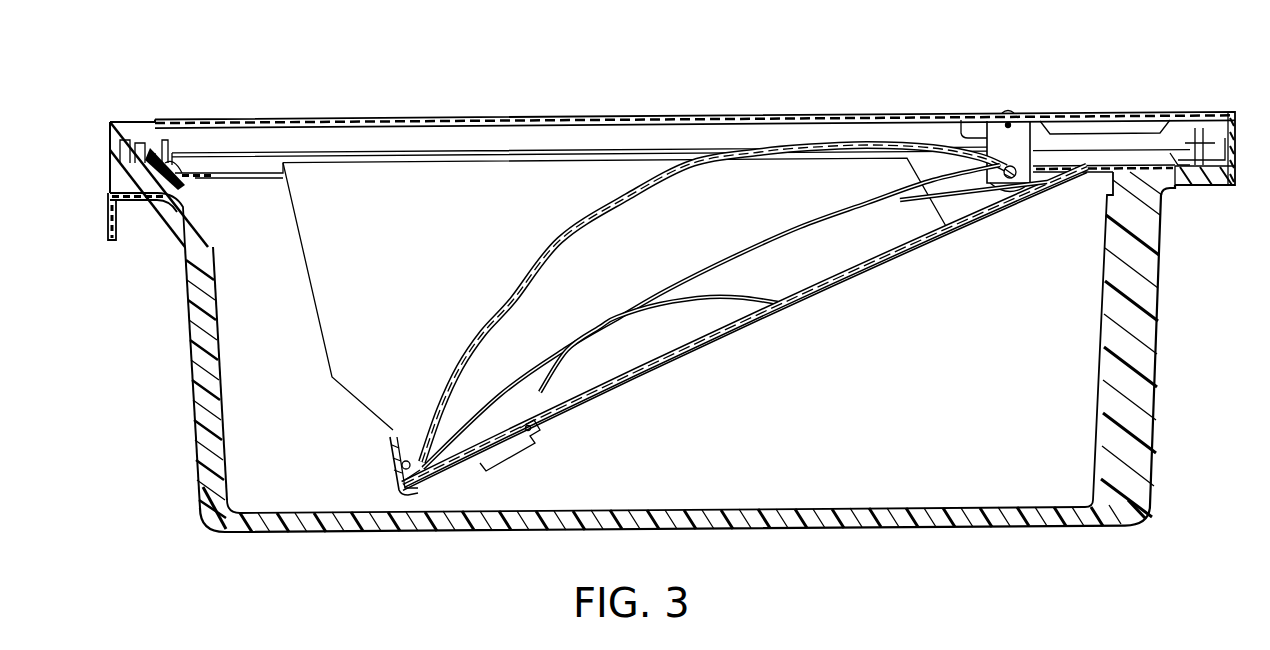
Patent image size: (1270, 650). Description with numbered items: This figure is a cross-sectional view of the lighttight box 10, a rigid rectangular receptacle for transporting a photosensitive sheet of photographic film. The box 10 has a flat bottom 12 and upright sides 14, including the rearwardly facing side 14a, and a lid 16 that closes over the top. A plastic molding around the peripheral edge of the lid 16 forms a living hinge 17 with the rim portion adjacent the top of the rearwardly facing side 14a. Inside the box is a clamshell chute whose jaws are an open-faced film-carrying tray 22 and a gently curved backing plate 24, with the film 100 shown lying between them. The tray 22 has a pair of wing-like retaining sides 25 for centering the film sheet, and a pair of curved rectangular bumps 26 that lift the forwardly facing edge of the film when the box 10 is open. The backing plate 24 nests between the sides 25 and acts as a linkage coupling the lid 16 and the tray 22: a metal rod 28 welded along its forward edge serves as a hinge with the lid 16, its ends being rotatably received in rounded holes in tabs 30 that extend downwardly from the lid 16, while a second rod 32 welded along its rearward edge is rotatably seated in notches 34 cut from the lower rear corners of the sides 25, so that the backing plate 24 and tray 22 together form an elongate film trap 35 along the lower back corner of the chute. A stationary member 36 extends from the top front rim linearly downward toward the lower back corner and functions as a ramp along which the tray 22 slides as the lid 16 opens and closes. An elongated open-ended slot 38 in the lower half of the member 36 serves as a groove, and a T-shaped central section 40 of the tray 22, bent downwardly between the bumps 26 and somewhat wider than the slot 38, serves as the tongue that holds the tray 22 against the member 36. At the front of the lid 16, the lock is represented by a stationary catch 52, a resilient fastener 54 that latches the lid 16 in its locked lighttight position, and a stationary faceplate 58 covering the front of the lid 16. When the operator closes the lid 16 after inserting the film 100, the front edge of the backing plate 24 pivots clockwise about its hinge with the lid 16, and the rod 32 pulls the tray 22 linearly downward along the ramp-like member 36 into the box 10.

The lighttight box 10 is at (1172, 273).
The flat bottom 12 is at (903, 530).
The upright sides 14 is at (1157, 433).
The rearwardly facing side 14a is at (194, 450).
The lid 16 is at (745, 116).
The living hinge 17 is at (110, 160).
The film-carrying tray 22 is at (870, 273).
The backing plate 24 is at (560, 252).
The retaining sides 25 is at (416, 238).
The curved rectangular bumps 26 is at (727, 293).
The metal rod 28 is at (1015, 168).
The tabs 30 is at (964, 118).
The rod 32 is at (398, 477).
The notches 34 is at (413, 457).
The film trap 35 is at (413, 484).
The stationary member 36 is at (1005, 213).
The slot 38 is at (867, 275).
The T-shaped central section 40 is at (510, 447).
The stationary catch 52 is at (1207, 183).
The resilient fastener 54 is at (1205, 116).
The faceplate 58 is at (1237, 145).
The film 100 is at (744, 252).